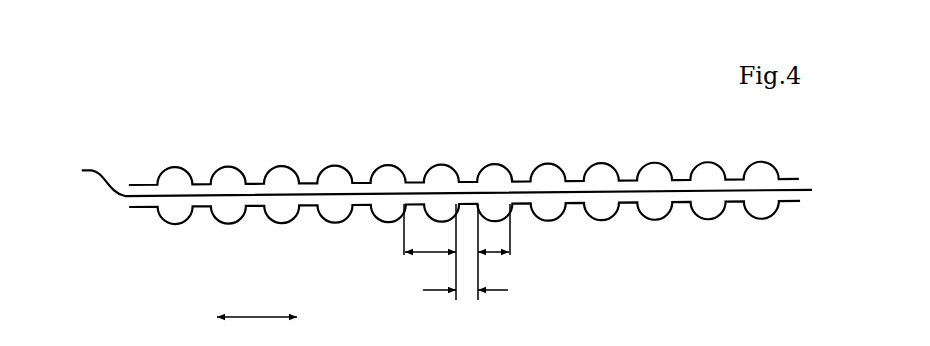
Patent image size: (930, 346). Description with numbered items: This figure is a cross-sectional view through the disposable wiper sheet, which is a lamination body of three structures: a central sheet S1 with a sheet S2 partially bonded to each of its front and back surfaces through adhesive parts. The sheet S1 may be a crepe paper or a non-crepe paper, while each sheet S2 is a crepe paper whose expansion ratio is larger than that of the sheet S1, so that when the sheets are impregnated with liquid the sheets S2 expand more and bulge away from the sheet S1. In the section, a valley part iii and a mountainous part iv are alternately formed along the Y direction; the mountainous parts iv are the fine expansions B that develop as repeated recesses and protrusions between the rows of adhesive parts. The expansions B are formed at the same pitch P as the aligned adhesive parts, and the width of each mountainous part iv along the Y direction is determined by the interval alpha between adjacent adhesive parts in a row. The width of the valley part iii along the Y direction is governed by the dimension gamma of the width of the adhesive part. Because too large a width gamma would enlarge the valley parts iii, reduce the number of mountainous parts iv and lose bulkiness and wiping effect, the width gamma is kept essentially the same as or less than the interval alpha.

The sheet S1 is at (434, 174).
The sheet S2 is at (148, 184).
The expansions B is at (178, 168).
The valley part iii is at (257, 182).
The mountainous part iv is at (290, 167).
The Y direction Y is at (257, 328).
The pitch P is at (430, 252).
The interval alpha is at (494, 252).
The width of the adhesive part gamma is at (465, 306).